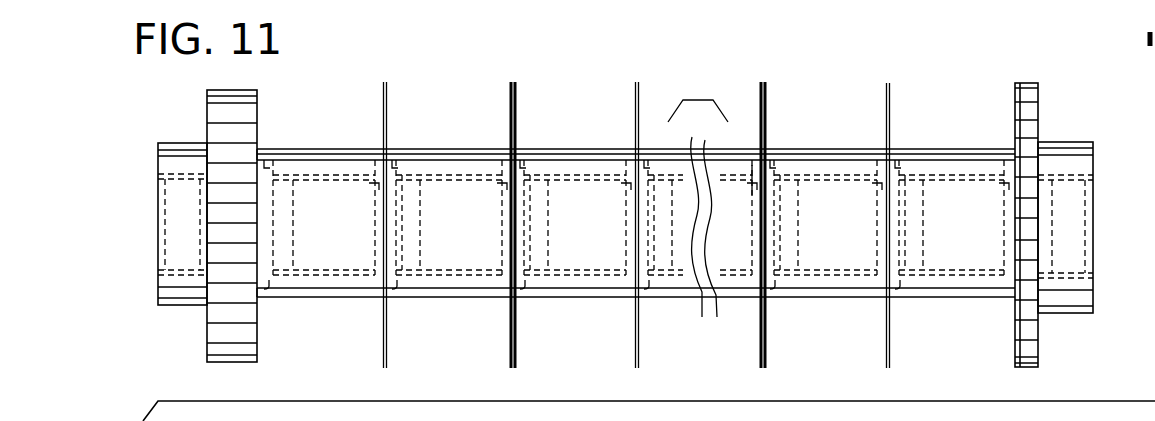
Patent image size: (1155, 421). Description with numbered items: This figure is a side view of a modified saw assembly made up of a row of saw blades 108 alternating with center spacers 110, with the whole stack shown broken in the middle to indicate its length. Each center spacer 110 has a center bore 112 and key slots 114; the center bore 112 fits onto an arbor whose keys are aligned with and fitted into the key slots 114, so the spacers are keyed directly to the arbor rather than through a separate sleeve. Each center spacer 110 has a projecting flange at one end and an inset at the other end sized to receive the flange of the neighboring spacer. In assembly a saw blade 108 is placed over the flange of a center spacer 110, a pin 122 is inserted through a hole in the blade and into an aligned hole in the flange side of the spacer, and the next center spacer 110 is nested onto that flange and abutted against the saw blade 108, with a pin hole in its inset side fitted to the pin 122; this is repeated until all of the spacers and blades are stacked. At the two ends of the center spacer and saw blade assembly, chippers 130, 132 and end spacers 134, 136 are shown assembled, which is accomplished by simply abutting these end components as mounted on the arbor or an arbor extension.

The saw blade 108 is at (387, 123).
The center spacer 110 is at (465, 150).
The center bore 112 is at (948, 182).
The key slots 114 is at (963, 167).
The pin 122 is at (763, 187).
The chipper 130 is at (242, 128).
The chipper 132 is at (1025, 85).
The end spacer 134 is at (177, 157).
The end spacer 136 is at (1063, 148).